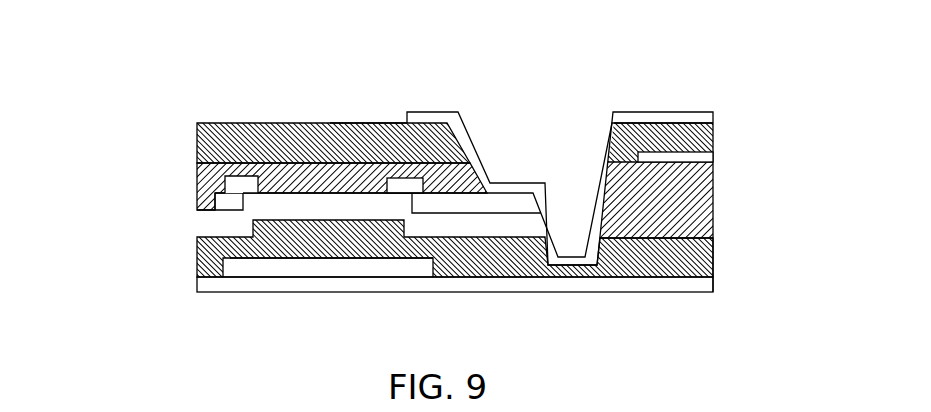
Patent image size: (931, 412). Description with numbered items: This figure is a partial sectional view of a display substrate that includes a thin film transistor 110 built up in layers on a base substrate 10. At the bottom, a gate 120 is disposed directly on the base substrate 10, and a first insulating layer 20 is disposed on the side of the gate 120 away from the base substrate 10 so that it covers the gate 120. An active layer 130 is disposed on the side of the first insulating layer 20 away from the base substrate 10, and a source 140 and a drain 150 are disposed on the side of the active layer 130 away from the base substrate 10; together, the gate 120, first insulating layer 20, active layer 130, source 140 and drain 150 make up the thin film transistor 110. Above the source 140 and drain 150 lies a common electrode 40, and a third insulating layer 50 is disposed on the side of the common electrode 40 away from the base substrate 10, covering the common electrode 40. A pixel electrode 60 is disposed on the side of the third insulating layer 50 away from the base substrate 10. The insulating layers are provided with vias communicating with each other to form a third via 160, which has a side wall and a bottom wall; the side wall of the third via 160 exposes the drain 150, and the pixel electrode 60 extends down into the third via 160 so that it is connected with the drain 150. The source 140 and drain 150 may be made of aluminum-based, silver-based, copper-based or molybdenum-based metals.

The base substrate 10 is at (197, 282).
The first insulating layer 20 is at (197, 250).
The common electrode 40 is at (713, 152).
The third insulating layer 50 is at (197, 137).
The pixel electrode 60 is at (643, 110).
The thin film transistor 110 is at (245, 268).
The gate 120 is at (372, 260).
The active layer 130 is at (203, 222).
The source 140 is at (197, 175).
The drain 150 is at (372, 124).
The third via 160 is at (544, 168).